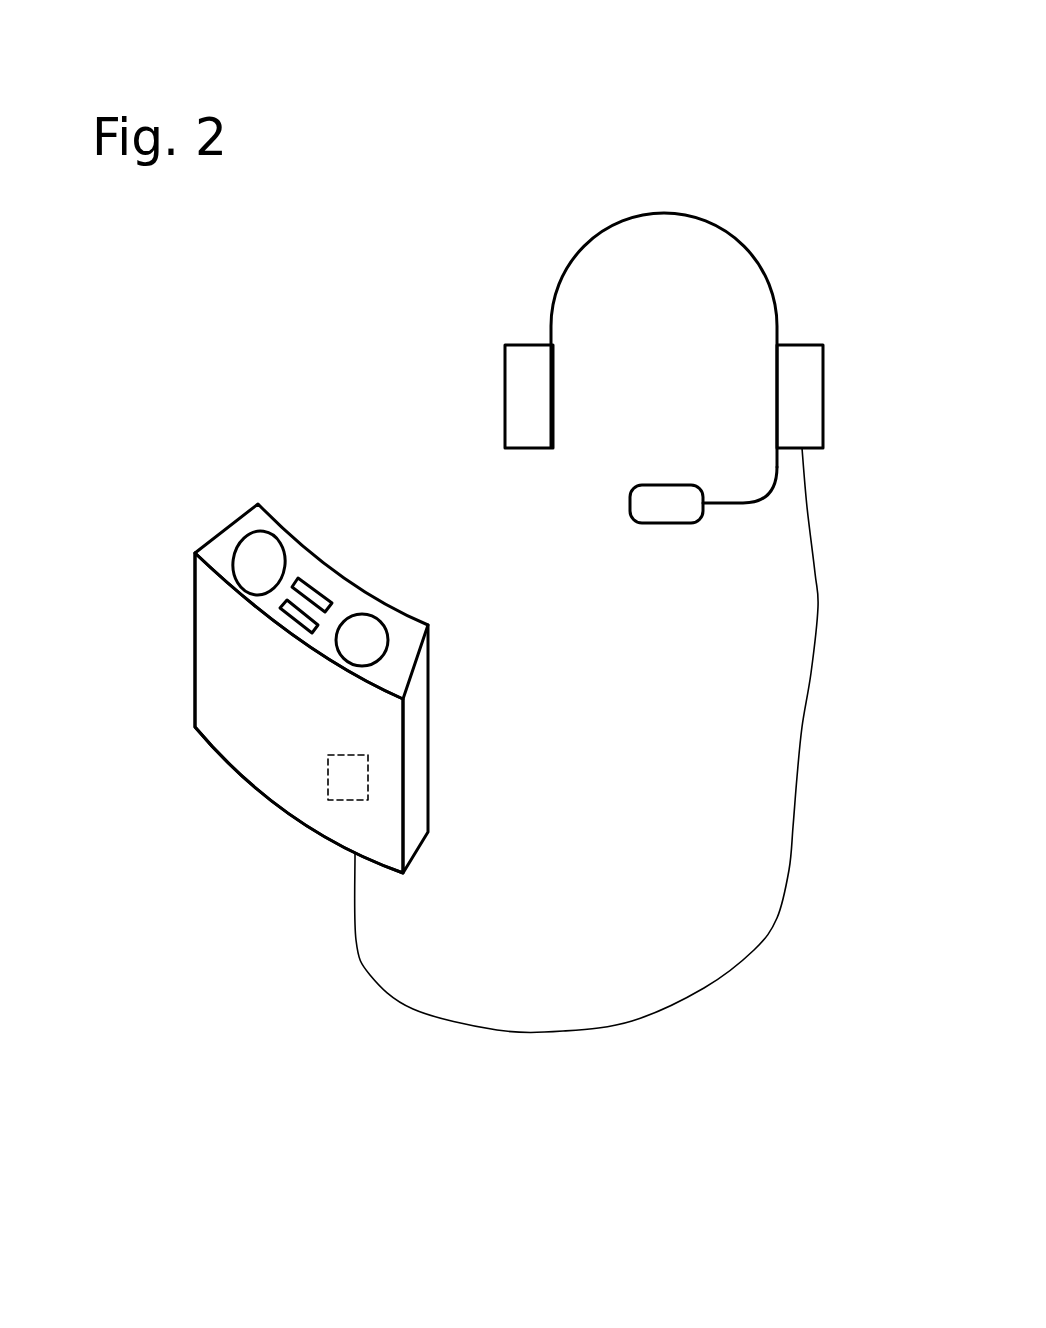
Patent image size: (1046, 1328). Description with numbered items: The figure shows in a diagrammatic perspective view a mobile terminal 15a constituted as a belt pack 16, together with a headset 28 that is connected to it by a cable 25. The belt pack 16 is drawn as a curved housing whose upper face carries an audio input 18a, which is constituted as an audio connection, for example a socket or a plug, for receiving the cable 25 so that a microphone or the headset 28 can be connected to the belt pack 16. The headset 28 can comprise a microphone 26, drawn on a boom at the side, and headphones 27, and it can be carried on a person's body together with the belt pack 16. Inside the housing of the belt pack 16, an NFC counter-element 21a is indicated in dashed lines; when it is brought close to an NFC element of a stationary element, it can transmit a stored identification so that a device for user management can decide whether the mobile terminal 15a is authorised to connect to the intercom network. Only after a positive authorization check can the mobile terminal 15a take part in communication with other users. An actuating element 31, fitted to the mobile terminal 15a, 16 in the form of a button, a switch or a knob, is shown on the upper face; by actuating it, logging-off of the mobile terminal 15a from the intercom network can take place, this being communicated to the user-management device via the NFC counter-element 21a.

The mobile terminal 15a is at (191, 760).
The belt pack 16 is at (260, 717).
The audio input 18a is at (370, 636).
The NFC counter-element 21a is at (340, 788).
The cable 25 is at (642, 1020).
The microphone 26 is at (673, 505).
The headphones 27 is at (800, 377).
The headset 28 is at (686, 210).
The switches 31 is at (312, 597).